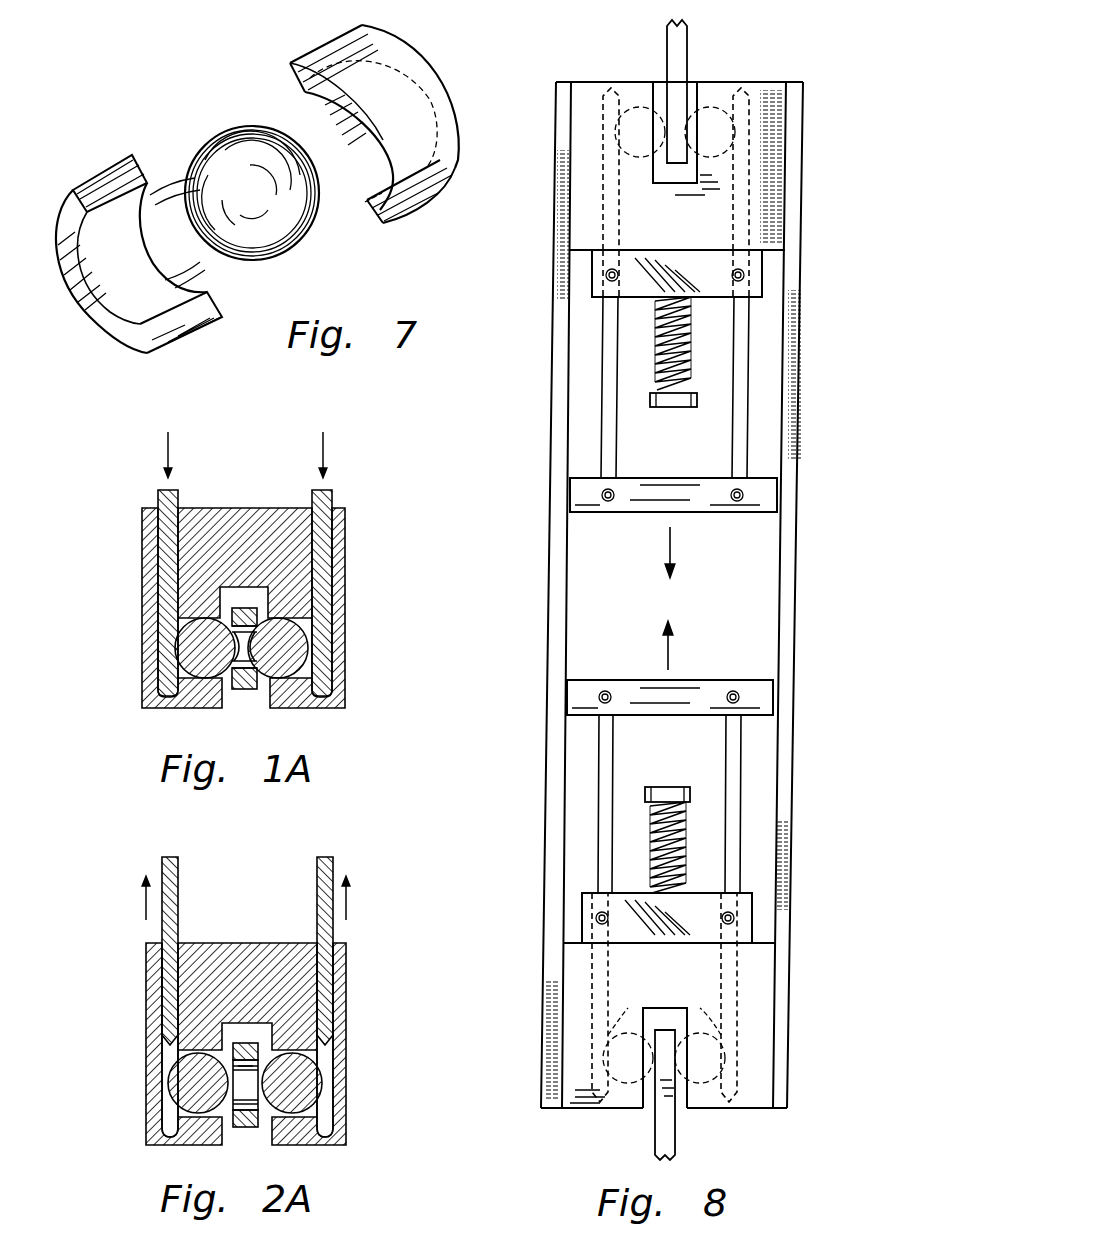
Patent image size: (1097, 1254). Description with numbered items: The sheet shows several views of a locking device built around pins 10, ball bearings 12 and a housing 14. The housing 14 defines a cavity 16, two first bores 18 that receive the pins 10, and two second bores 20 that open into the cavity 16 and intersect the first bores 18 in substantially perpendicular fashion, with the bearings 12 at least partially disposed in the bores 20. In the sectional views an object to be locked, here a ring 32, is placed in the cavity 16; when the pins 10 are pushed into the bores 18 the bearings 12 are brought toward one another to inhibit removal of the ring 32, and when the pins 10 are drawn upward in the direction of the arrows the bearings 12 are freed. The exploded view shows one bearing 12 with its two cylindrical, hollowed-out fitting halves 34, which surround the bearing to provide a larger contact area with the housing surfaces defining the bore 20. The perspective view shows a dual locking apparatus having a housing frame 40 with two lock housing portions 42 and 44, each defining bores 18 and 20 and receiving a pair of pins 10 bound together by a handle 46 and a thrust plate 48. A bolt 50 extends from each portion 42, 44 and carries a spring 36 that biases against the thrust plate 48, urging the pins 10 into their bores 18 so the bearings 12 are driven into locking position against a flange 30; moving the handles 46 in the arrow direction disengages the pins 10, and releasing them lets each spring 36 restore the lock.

In FIG. 1A, the pin 10 is at (160, 497).
In FIG. 2A, the pin 10 is at (168, 862).
In FIG. 8, the pin 10 is at (608, 387).
In FIG. 7, the ball bearing 12 is at (250, 183).
In FIG. 2A, the ball bearing 12 is at (190, 1087).
In FIG. 8, the ball bearing 12 is at (665, 125).
In FIG. 1A, the housing 14 is at (232, 540).
In FIG. 2A, the housing 14 is at (275, 967).
In FIG. 1A, the cavity 16 is at (254, 604).
In FIG. 2A, the cavity 16 is at (254, 1034).
In FIG. 2A, the bore 18 is at (163, 1055).
In FIG. 8, the bore 18 is at (596, 975).
In FIG. 8, the bore 20 is at (613, 1033).
In FIG. 8, the dimpled flange 30 is at (680, 48).
In FIG. 1A, the ring 32 is at (263, 603).
In FIG. 2A, the ring 32 is at (226, 1031).
In FIG. 7, the fitting half 34 is at (78, 273).
In FIG. 8, the spring 36 is at (690, 350).
In FIG. 8, the housing frame 40 is at (789, 495).
In FIG. 8, the lock housing portion 42 is at (765, 115).
In FIG. 8, the lock housing portion 44 is at (578, 1095).
In FIG. 8, the handle 46 is at (712, 500).
In FIG. 8, the thrust plate 48 is at (718, 282).
In FIG. 8, the bolt 50 is at (672, 410).